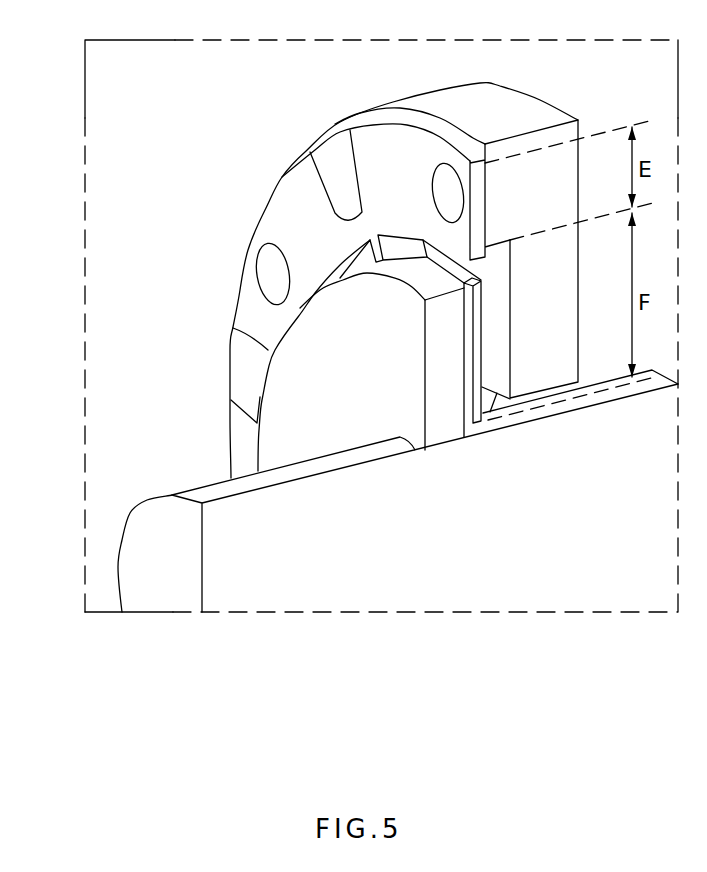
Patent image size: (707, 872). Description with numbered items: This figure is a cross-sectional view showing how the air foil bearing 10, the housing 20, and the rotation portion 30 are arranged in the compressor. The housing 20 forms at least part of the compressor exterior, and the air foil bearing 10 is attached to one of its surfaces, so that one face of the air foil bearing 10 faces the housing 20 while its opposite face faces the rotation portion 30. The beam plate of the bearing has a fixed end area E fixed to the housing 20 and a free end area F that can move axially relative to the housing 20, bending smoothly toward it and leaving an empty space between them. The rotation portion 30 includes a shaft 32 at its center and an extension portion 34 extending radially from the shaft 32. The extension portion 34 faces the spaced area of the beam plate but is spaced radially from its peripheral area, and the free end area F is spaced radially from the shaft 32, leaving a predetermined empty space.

The air foil bearing 10 is at (373, 280).
The housing 20 is at (530, 113).
The rotation portion 30 is at (97, 568).
The shaft 32 is at (380, 588).
The extension portion 34 is at (310, 380).